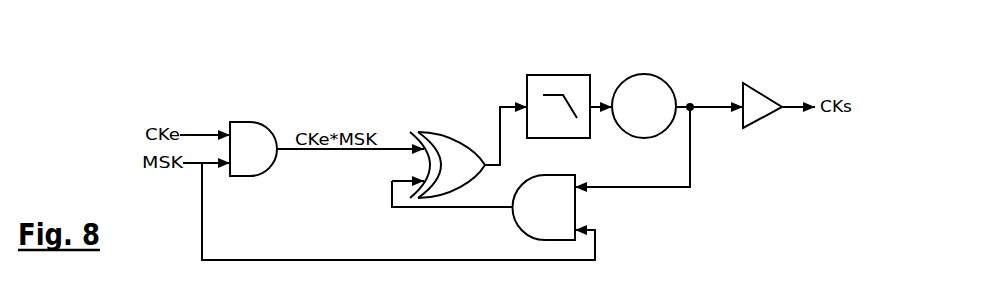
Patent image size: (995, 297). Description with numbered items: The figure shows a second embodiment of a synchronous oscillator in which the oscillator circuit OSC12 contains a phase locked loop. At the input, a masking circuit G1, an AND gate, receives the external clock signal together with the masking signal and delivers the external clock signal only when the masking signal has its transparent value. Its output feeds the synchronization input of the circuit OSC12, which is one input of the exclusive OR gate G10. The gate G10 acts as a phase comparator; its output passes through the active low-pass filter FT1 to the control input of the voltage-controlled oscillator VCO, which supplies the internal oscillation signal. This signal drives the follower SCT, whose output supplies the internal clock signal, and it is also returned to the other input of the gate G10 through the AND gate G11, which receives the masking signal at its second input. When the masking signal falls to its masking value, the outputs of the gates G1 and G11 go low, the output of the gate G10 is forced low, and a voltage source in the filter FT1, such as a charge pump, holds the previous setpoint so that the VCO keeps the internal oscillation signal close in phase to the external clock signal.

The masking circuit G1 is at (262, 159).
The gate of exclusive OR type G10 is at (468, 175).
The gate of AND type G11 is at (560, 218).
The active low-pass filter FT1 is at (527, 97).
The voltage-controlled oscillator VCO is at (662, 115).
The follower SCT is at (765, 115).
The oscillator circuit OSC12 is at (405, 84).